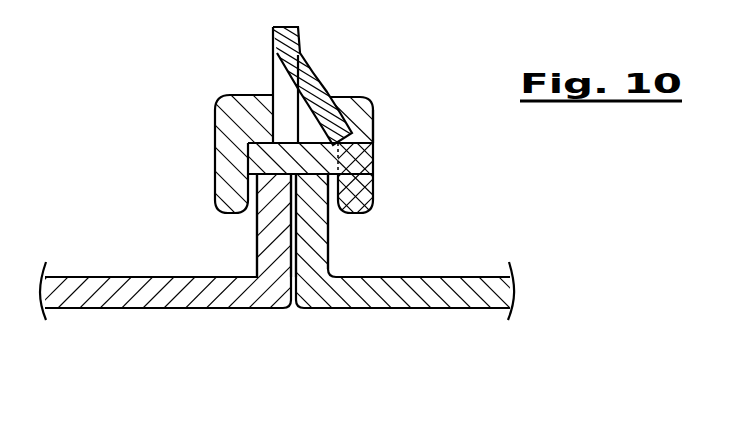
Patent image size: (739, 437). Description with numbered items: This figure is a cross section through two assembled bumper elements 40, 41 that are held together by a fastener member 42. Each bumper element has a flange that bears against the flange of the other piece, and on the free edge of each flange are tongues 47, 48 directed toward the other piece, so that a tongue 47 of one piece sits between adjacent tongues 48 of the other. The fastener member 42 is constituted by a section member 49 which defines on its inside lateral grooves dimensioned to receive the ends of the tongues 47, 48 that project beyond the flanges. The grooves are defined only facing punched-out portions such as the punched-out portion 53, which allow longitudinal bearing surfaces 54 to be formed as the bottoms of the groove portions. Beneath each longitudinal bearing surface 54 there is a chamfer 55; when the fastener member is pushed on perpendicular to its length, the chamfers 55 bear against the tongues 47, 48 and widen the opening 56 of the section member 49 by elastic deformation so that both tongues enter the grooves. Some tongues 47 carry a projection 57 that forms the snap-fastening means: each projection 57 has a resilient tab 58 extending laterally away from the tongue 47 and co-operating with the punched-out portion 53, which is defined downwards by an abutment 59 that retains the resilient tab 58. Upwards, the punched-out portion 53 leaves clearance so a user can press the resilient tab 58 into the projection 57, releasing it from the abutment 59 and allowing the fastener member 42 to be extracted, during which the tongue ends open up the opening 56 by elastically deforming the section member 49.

The bumper element 40 is at (165, 328).
The bumper element 41 is at (417, 332).
The fastener member 42 is at (320, 129).
The tongue 47 is at (269, 158).
The tongue 48 is at (369, 178).
The section member 49 is at (224, 101).
The punched-out portion 53 is at (283, 154).
The longitudinal bearing surface 54 is at (360, 194).
The chamfer 55 is at (334, 206).
The opening 56 is at (236, 236).
The projection 57 is at (284, 103).
The resilient tab 58 is at (323, 114).
The abutment 59 is at (371, 139).